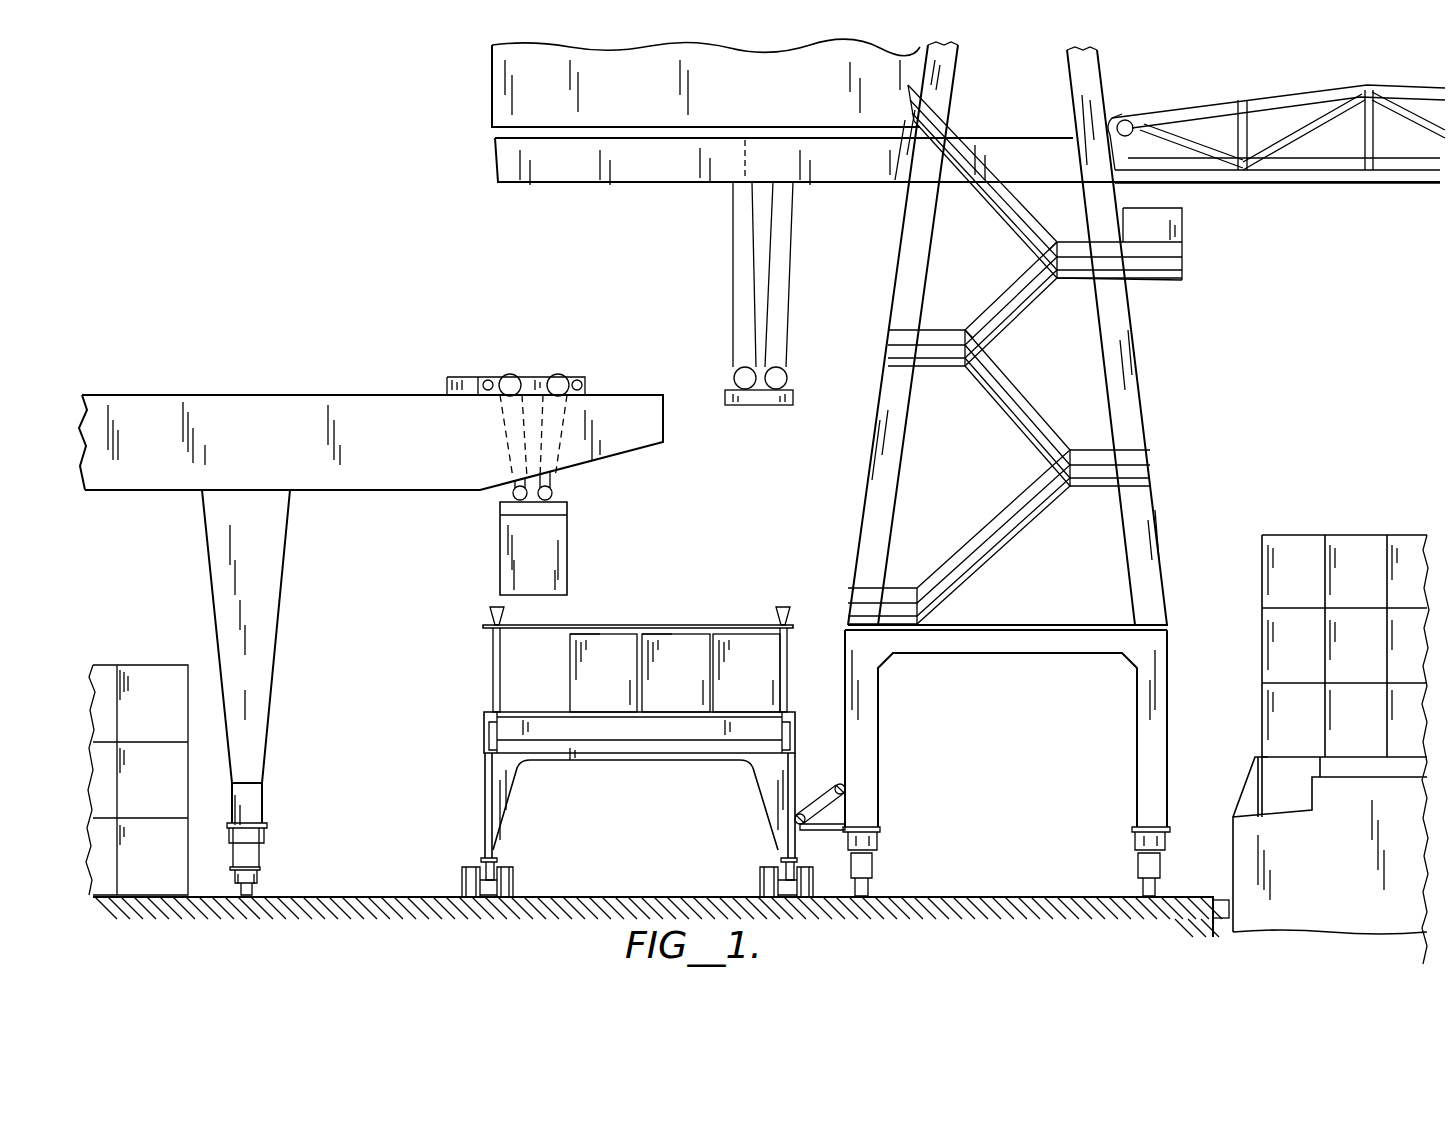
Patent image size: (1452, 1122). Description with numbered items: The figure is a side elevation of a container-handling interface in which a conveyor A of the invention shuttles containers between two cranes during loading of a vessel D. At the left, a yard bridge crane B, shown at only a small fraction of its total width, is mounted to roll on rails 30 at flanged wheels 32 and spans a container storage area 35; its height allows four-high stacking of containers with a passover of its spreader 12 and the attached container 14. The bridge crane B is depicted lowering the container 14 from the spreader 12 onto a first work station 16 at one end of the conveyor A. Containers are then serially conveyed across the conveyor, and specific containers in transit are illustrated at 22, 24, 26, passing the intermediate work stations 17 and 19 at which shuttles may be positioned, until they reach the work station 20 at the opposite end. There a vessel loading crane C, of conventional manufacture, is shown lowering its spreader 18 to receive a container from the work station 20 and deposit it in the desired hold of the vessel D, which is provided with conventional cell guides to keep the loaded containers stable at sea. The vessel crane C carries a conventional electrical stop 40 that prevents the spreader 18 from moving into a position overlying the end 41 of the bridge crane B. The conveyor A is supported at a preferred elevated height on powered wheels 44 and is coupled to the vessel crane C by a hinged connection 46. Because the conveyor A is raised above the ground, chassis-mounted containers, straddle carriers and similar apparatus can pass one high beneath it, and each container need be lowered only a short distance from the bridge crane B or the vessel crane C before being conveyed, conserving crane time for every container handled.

The spreader 12 is at (567, 505).
The container 14 is at (548, 566).
The first work station 16 is at (492, 668).
The work station 17 is at (597, 632).
The spreader 18 is at (793, 398).
The work station 19 is at (668, 632).
The work station 20 is at (781, 668).
The container 22 is at (616, 682).
The container 24 is at (691, 682).
The container 26 is at (761, 682).
The rails 30 is at (246, 896).
The flanged wheels 32 is at (258, 880).
The container storage area 35 is at (160, 797).
The electrical stop 40 is at (748, 152).
The end of bridge crane 41 is at (663, 420).
The powered wheels 44 is at (513, 880).
The hinged connection 46 is at (820, 796).
The conveyor A is at (482, 745).
The yard bridge crane B is at (386, 502).
The vessel loading crane C is at (781, 96).
The vessel D is at (1350, 872).